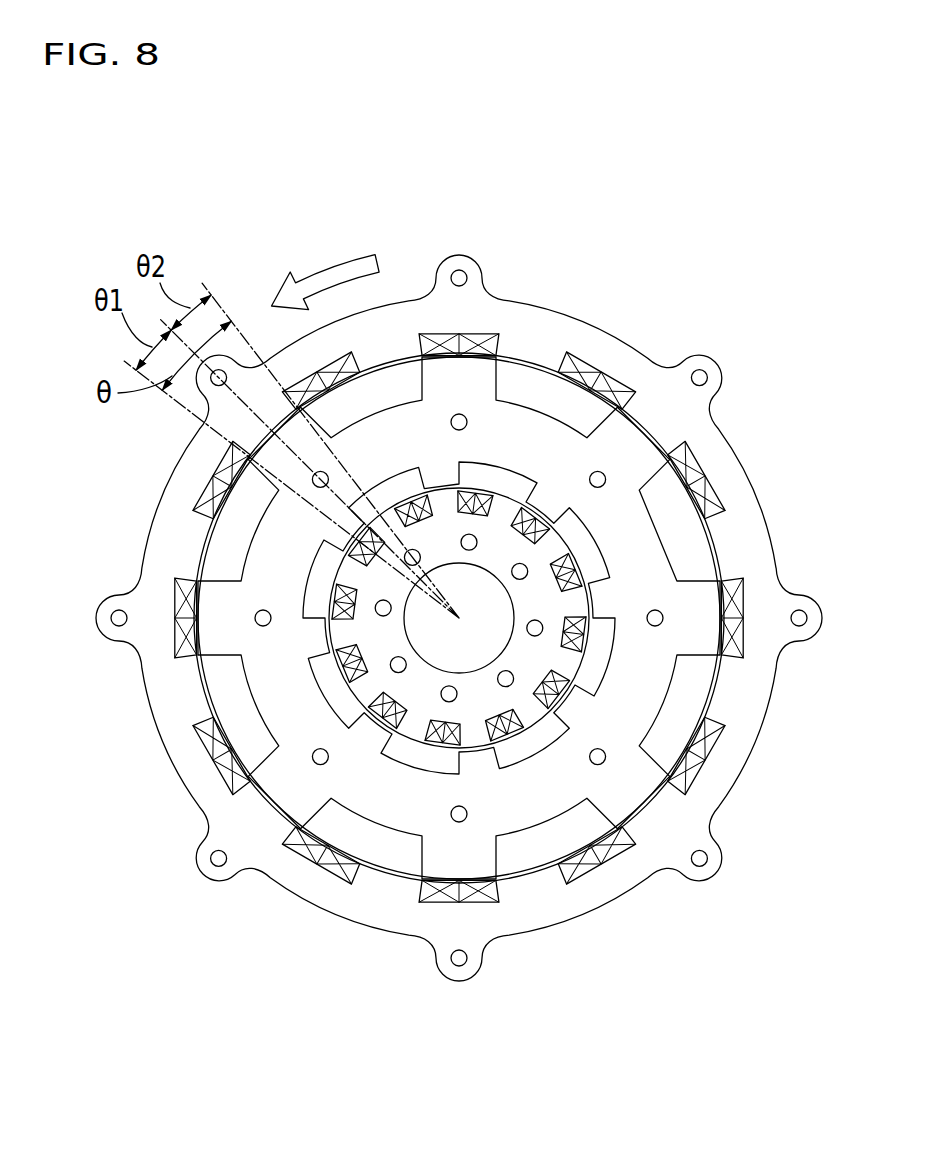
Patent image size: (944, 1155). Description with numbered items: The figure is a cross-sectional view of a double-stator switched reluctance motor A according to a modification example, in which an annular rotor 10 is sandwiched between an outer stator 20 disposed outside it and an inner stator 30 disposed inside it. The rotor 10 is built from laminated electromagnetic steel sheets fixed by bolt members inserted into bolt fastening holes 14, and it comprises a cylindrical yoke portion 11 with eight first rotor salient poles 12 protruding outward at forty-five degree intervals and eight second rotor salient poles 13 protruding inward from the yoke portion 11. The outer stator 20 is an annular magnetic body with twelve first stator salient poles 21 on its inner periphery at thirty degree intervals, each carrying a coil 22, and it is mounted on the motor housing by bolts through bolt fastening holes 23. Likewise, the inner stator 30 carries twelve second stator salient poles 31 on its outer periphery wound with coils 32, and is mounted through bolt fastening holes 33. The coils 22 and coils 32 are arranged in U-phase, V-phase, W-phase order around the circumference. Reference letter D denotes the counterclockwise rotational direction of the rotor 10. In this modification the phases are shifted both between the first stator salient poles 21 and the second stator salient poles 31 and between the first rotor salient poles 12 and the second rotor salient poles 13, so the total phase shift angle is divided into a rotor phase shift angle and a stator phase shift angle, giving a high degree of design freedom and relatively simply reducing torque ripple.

The rotor 10 is at (504, 557).
The yoke portion 11 is at (559, 416).
The first rotor salient poles 12 is at (634, 418).
The second rotor salient poles 13 is at (568, 556).
The bolt fastening holes 14 is at (606, 482).
The outer stator 20 is at (598, 324).
The first stator salient poles 21 is at (648, 438).
The coils 22 is at (692, 463).
The bolt fastening holes 23 is at (457, 270).
The inner stator 30 is at (572, 618).
The second stator salient poles 31 is at (806, 564).
The coils 32 is at (594, 571).
The bolt fastening holes 33 is at (470, 540).
The double-stator switched reluctance motor A is at (246, 242).
The rotational direction D is at (347, 265).